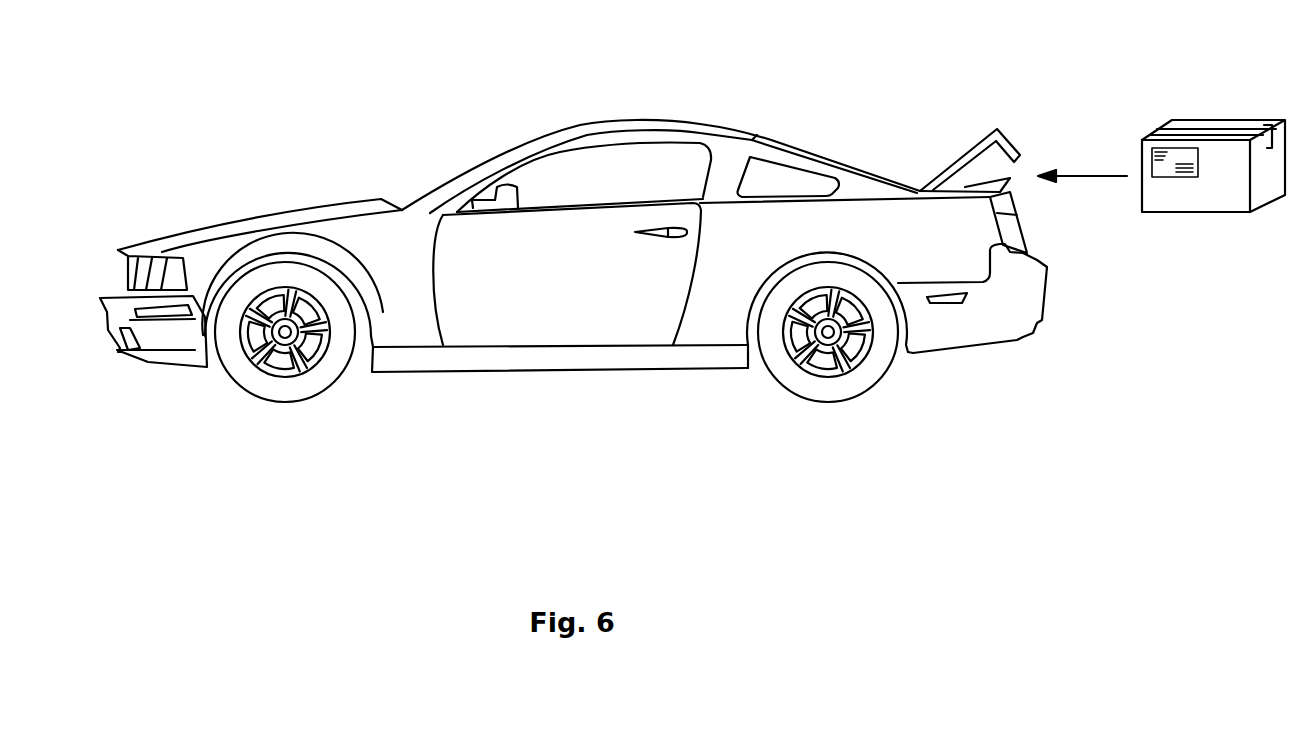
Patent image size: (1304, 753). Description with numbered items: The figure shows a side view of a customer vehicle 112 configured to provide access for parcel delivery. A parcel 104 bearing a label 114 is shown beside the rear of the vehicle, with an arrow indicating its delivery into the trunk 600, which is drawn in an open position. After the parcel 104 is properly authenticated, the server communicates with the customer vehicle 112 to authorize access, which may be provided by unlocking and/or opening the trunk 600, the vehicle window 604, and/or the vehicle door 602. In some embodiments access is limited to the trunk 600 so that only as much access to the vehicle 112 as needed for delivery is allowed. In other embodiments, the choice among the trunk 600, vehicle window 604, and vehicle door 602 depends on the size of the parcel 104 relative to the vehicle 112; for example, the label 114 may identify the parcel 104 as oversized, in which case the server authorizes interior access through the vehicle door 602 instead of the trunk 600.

The customer vehicle 112 is at (406, 137).
The trunk 600 is at (1009, 137).
The vehicle door 602 is at (554, 289).
The vehicle window 604 is at (587, 183).
The label 114 is at (1153, 158).
The parcel 104 is at (1192, 206).